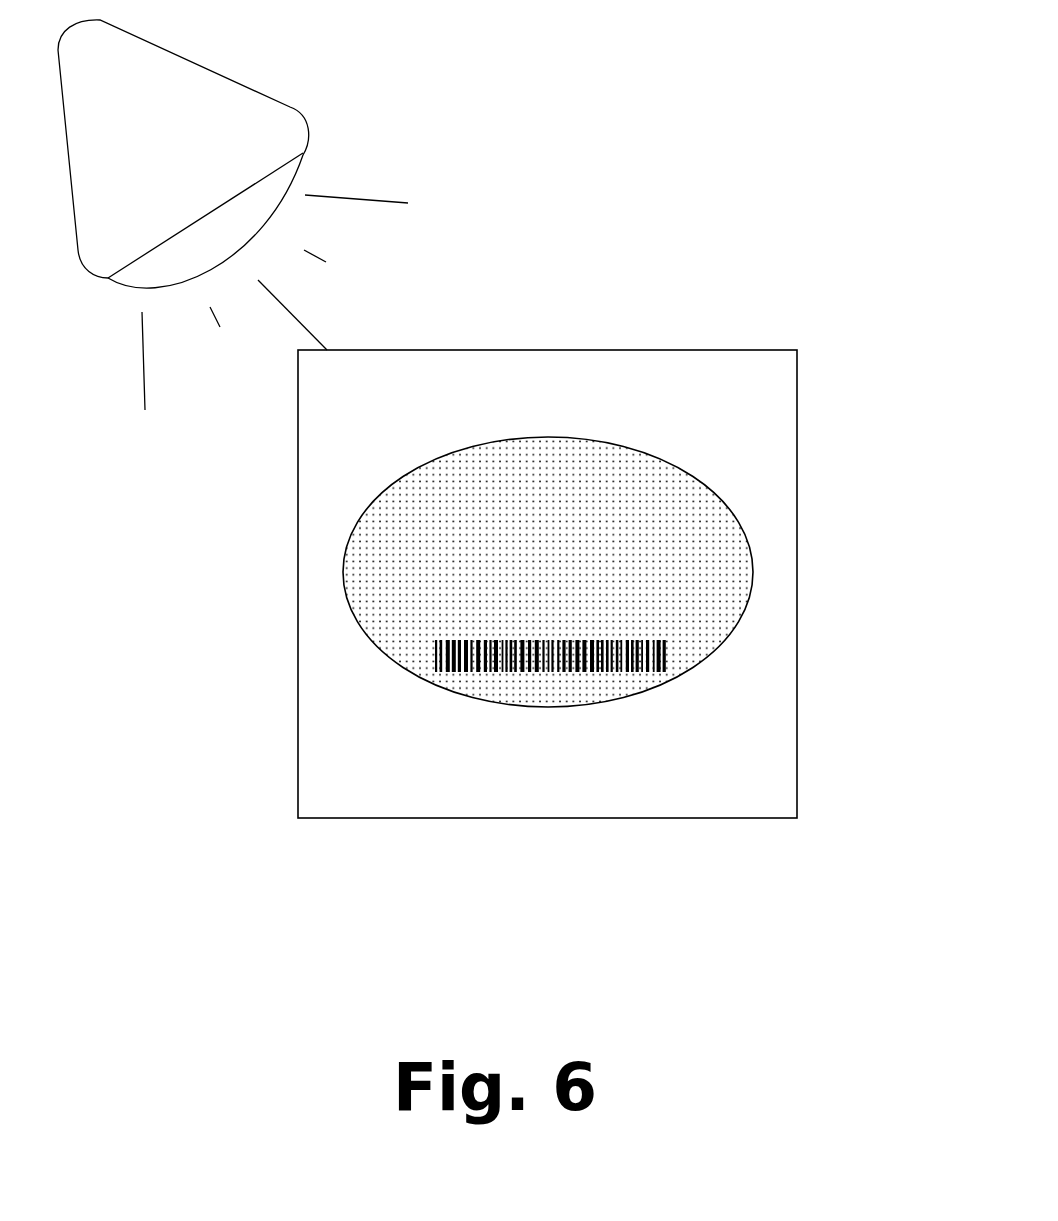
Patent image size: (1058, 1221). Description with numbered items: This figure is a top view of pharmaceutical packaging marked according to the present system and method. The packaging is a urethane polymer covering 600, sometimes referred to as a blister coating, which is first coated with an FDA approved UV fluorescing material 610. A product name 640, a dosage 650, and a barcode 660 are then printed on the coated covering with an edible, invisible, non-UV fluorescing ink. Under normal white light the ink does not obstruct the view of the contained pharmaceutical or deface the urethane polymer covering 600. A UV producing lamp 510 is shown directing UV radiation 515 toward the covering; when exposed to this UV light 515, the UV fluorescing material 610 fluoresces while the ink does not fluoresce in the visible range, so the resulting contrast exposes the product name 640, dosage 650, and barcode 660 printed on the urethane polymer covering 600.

The UV producing lamp 510 is at (365, 133).
The UV radiation 515 is at (417, 212).
The urethane polymer covering 600 is at (777, 331).
The UV fluorescing material 610 is at (707, 548).
The product name 640 is at (458, 522).
The dosage 650 is at (457, 573).
The barcode 660 is at (435, 643).